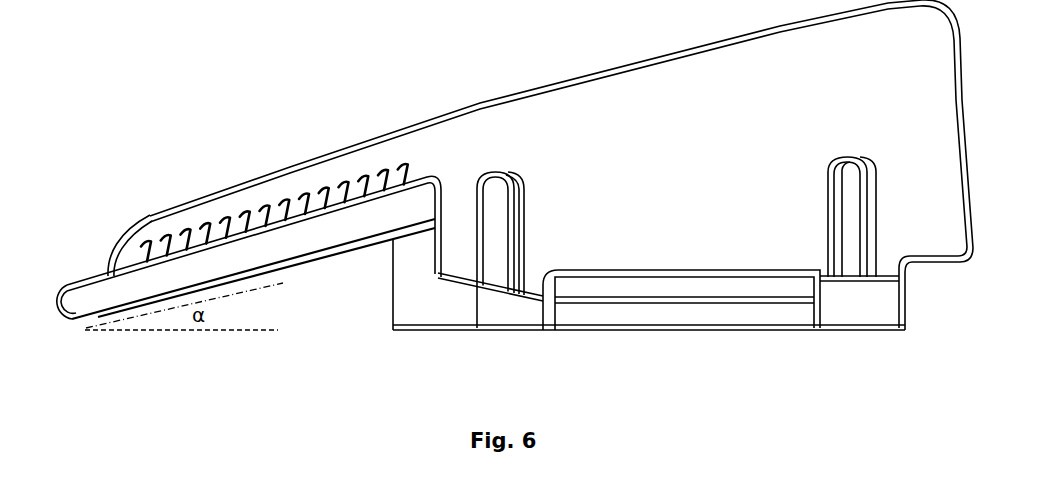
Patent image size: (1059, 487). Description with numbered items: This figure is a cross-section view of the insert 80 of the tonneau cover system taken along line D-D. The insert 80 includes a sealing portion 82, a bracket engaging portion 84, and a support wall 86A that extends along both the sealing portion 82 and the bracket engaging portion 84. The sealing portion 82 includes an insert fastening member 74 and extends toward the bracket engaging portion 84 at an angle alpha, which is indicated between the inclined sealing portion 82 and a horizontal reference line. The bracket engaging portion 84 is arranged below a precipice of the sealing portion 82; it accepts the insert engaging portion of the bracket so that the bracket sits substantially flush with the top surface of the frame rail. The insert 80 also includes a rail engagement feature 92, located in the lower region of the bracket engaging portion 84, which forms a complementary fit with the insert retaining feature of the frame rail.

The insert fastening member 74 is at (160, 238).
The insert 80 is at (410, 92).
The sealing portion 82 is at (243, 195).
The bracket engaging portion 84 is at (706, 268).
The support wall 86A is at (625, 100).
The rail engagement feature 92 is at (672, 320).